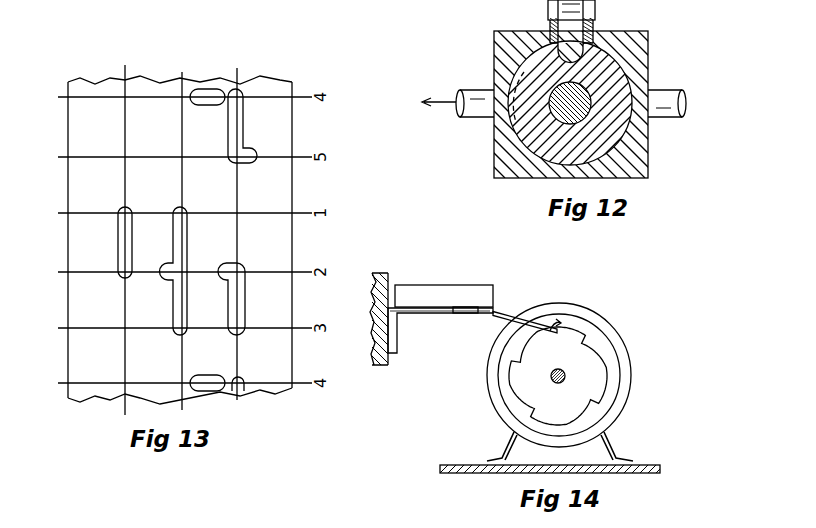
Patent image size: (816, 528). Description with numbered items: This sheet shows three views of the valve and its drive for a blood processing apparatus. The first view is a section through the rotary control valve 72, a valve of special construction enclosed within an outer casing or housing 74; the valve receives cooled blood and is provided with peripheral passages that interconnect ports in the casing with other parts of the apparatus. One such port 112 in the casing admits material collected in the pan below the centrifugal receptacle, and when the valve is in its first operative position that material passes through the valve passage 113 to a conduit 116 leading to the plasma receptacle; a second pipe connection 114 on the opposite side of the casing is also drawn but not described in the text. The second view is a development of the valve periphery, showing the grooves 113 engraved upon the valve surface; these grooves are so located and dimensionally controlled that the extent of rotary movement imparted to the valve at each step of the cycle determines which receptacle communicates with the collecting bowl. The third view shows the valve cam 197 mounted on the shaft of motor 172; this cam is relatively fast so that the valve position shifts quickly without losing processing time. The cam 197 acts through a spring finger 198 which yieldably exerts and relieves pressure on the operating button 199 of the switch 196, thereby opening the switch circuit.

In FIG. 12, the control valve 72 is at (615, 128).
In FIG. 12, the outer casing 74 is at (640, 155).
In FIG. 12, the port 112 is at (552, 26).
In FIG. 12, the valve passage 113 is at (524, 66).
In FIG. 13, the valve passage 113 is at (120, 251).
In FIG. 12, the inlet pipe 114 is at (656, 92).
In FIG. 12, the conduit 116 is at (470, 90).
In FIG. 14, the motor 172 is at (624, 398).
In FIG. 14, the switch 196 is at (413, 285).
In FIG. 14, the valve cam 197 is at (583, 342).
In FIG. 14, the spring finger 198 is at (508, 311).
In FIG. 14, the operating button 199 is at (462, 307).